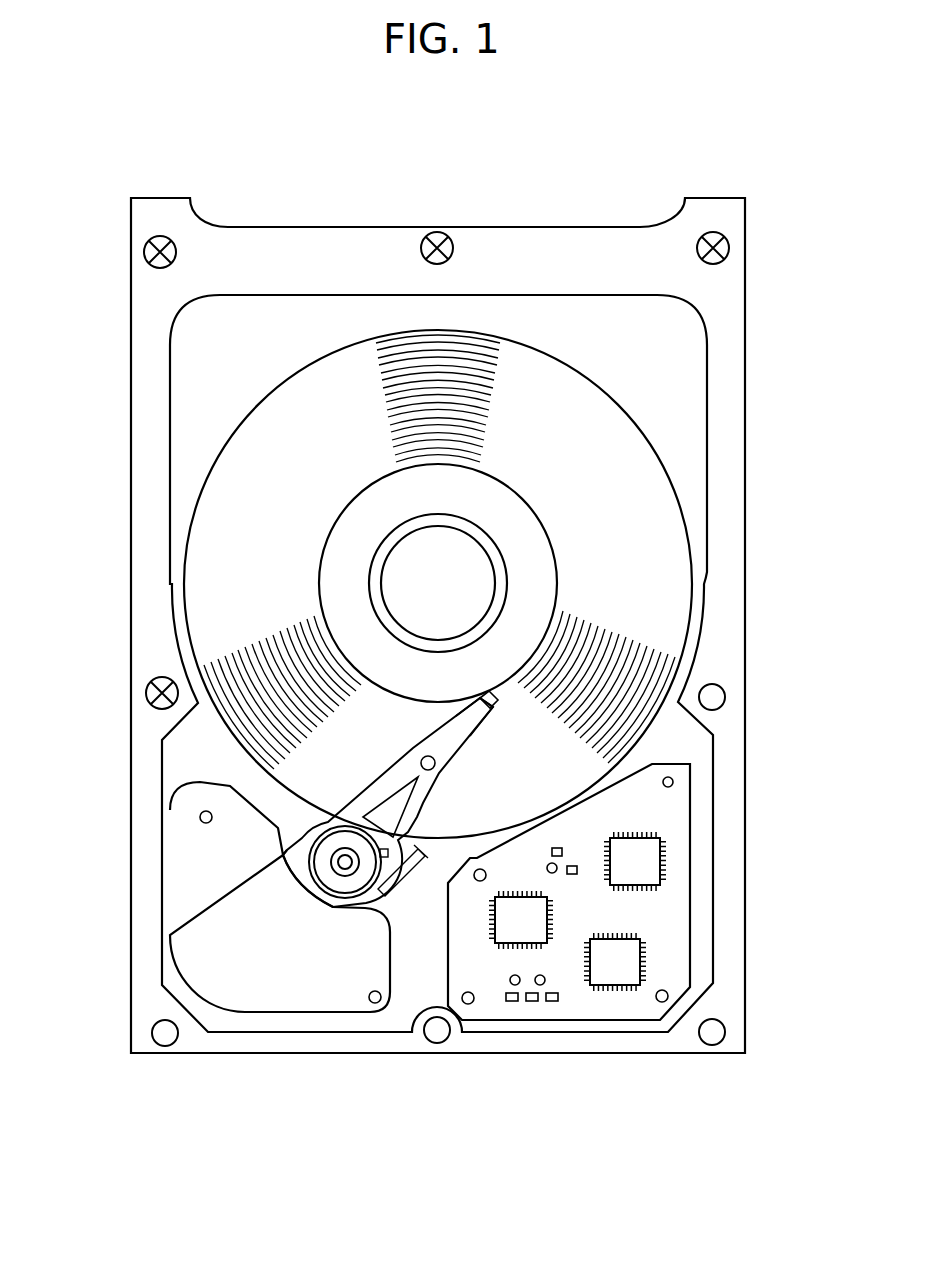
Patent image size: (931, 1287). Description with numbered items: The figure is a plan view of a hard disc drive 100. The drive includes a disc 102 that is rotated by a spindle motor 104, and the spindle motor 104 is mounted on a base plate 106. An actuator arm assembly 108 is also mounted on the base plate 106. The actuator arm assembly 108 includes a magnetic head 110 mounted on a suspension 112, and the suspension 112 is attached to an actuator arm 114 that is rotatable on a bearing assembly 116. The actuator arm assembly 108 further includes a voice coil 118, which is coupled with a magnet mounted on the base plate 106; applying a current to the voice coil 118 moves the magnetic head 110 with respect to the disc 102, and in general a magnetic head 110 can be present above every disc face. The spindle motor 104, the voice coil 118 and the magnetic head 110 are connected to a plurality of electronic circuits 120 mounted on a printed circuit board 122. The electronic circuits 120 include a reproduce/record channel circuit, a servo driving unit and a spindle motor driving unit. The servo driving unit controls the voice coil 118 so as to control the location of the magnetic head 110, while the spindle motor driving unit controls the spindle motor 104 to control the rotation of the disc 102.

The hard disc drive 100 is at (574, 171).
The disc 102 is at (620, 497).
The spindle motor 104 is at (330, 575).
The base plate 106 is at (183, 373).
The actuator arm assembly 108 is at (408, 815).
The magnetic head 110 is at (493, 712).
The suspension 112 is at (443, 742).
The actuator arm 114 is at (380, 798).
The bearing assembly 116 is at (362, 870).
The voice coil 118 is at (266, 980).
The electronic circuits 120 is at (648, 867).
The printed circuit board 122 is at (682, 805).